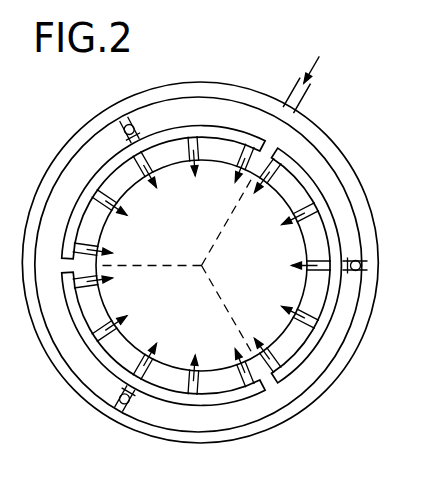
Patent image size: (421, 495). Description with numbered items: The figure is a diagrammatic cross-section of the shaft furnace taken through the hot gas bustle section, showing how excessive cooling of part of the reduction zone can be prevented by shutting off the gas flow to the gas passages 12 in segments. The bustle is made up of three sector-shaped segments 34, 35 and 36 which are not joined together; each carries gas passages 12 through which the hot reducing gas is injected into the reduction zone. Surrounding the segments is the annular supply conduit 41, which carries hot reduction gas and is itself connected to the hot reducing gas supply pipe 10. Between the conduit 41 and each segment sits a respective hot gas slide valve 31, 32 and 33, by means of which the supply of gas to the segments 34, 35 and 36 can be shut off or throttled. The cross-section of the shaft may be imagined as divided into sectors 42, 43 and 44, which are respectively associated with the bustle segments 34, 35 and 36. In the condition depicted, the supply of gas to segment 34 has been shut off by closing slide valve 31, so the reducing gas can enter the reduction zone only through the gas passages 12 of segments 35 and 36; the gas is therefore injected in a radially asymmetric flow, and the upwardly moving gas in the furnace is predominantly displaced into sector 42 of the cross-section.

The hot reducing gas supply pipe 10 is at (305, 95).
The gas passages 12 is at (300, 197).
The hot gas slide valve 31 is at (352, 272).
The hot gas slide valve 32 is at (112, 399).
The hot gas slide valve 33 is at (118, 133).
The sector-shaped bustle segment 34 is at (302, 355).
The sector-shaped bustle segment 35 is at (97, 352).
The sector-shaped bustle segment 36 is at (95, 178).
The annular supply conduit 41 is at (249, 92).
The sector 42 is at (270, 282).
The sector 43 is at (183, 318).
The sector 44 is at (183, 232).